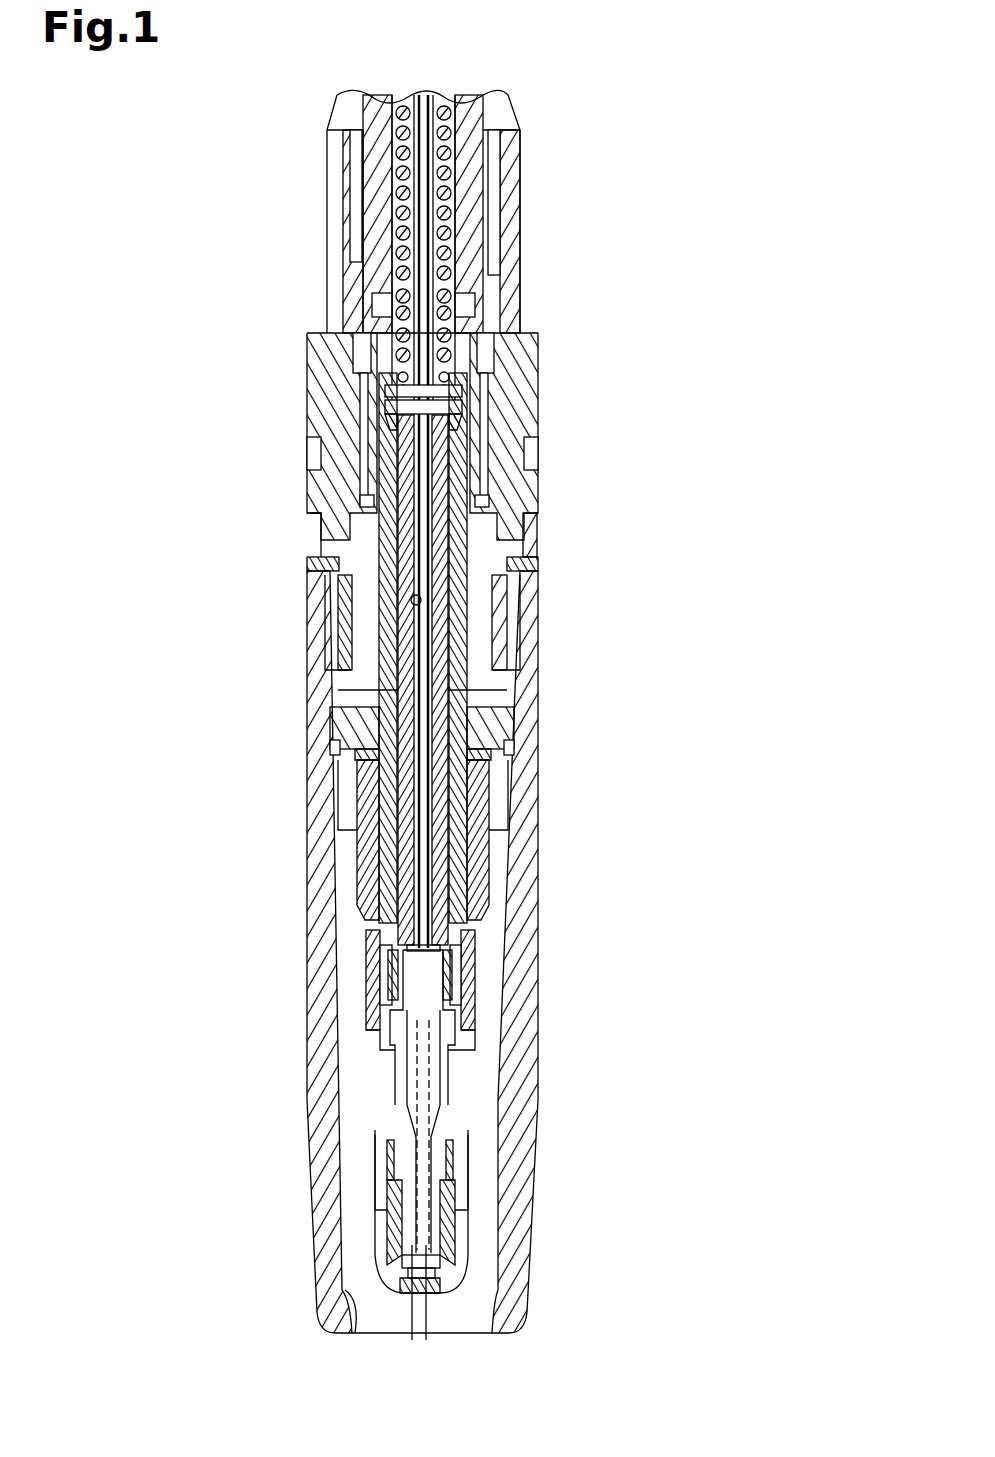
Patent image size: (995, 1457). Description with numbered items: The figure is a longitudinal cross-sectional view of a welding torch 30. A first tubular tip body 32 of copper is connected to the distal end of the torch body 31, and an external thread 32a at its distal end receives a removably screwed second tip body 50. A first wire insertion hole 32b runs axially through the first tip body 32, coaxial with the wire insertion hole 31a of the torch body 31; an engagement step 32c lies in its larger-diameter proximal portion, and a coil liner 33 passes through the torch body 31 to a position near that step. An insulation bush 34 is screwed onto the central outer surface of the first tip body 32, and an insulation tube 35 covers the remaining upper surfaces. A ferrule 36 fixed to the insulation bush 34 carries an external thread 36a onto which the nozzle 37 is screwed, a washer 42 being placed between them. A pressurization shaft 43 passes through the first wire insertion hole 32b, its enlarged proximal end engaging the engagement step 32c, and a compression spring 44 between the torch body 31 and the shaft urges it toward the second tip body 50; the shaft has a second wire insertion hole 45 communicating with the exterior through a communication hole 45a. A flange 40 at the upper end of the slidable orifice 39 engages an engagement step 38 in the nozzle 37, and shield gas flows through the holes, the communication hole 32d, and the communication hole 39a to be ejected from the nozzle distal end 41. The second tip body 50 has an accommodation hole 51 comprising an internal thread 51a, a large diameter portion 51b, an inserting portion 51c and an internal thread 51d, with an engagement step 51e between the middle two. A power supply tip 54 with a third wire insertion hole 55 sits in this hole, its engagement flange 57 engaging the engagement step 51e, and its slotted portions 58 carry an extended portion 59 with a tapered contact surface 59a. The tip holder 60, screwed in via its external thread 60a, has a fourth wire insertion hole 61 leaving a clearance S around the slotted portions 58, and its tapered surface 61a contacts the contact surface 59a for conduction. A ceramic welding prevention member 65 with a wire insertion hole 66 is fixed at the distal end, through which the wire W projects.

The welding torch 30 is at (575, 133).
The torch body 31 is at (372, 152).
The wire insertion hole 31a is at (400, 105).
The first tip body 32 is at (497, 324).
The external thread 32a is at (475, 963).
The first wire insertion hole 32b is at (450, 690).
The engagement step 32c is at (462, 424).
The communication hole 32d is at (470, 758).
The coil liner 33 is at (362, 140).
The insulation bush 34 is at (538, 492).
The insulation tube 35 is at (330, 200).
The ferrule 36 is at (538, 547).
The external thread 36a is at (500, 625).
The nozzle 37 is at (538, 790).
The engagement step 38 is at (332, 736).
The orifice 39 is at (355, 780).
The communication hole 39a is at (478, 823).
The flange 40 is at (330, 716).
The nozzle distal end 41 is at (352, 1330).
The washer 42 is at (307, 564).
The pressurization shaft 43 is at (398, 505).
The compression spring 44 is at (380, 375).
The second wire insertion hole 45 is at (410, 600).
The communication hole 45a is at (495, 571).
The second tip body 50 is at (392, 1020).
The accommodation hole 51 is at (452, 1120).
The internal thread 51a is at (384, 996).
The large diameter portion 51b is at (448, 1005).
The inserting portion 51c is at (450, 1090).
The internal thread 51d is at (455, 1172).
The engagement step 51e is at (452, 1040).
The power supply tip 54 is at (388, 1080).
The third wire insertion hole 55 is at (385, 965).
The engagement flange 57 is at (385, 1043).
The slotted portions 58 is at (450, 1146).
The extended portion 59 is at (385, 1112).
The contact surface 59a is at (380, 1185).
The tip holder 60 is at (380, 1240).
The external thread 60a is at (462, 1186).
The fourth wire insertion hole 61 is at (460, 1250).
The tapered surface 61a is at (462, 1216).
The welding prevention member 65 is at (436, 1294).
The wire insertion hole 66 is at (442, 1283).
The wire W is at (397, 855).
The clearance S is at (392, 1320).